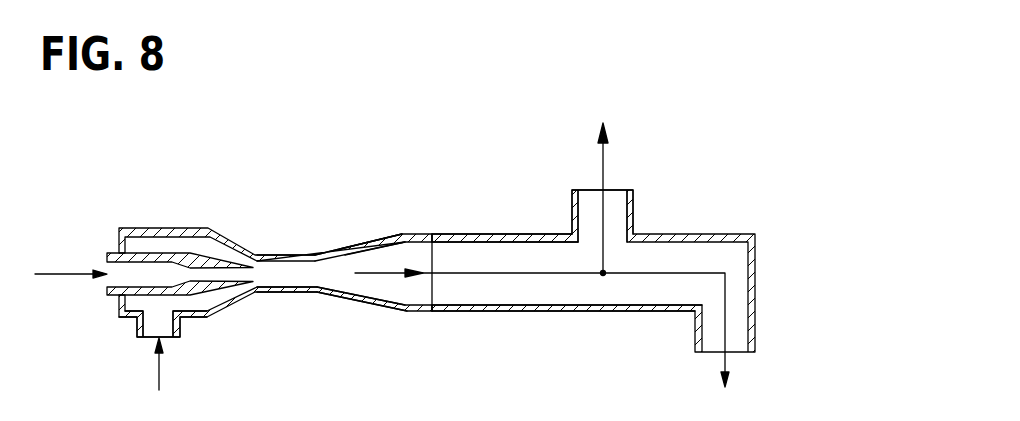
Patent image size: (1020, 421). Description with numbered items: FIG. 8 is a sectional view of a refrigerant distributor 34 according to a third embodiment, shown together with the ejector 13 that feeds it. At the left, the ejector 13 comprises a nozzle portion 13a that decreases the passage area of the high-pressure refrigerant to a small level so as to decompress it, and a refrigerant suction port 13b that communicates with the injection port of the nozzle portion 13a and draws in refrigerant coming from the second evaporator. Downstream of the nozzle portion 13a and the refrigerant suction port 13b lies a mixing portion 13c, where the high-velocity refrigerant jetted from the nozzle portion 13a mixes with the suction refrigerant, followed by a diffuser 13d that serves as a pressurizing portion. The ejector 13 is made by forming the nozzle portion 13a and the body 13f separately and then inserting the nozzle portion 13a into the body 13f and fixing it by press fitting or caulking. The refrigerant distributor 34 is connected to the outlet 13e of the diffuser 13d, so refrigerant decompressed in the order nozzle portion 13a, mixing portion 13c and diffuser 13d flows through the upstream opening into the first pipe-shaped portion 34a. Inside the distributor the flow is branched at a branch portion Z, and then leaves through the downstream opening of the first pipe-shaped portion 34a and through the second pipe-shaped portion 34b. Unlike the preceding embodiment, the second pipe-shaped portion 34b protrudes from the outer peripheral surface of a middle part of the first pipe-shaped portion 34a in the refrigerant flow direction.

The ejector 13 is at (309, 254).
The nozzle portion 13a is at (197, 268).
The refrigerant suction port 13b is at (152, 340).
The mixing portion 13c is at (283, 276).
The diffuser 13d is at (383, 282).
The outlet 13e is at (433, 290).
The body 13f is at (378, 238).
The refrigerant distributor 34 is at (495, 230).
The first pipe-shaped portion 34a is at (507, 290).
The second pipe-shaped portion 34b is at (617, 226).
The branch portion Z is at (604, 275).